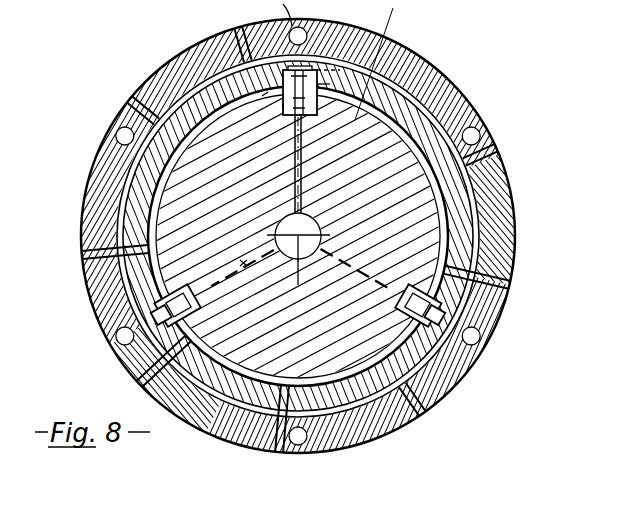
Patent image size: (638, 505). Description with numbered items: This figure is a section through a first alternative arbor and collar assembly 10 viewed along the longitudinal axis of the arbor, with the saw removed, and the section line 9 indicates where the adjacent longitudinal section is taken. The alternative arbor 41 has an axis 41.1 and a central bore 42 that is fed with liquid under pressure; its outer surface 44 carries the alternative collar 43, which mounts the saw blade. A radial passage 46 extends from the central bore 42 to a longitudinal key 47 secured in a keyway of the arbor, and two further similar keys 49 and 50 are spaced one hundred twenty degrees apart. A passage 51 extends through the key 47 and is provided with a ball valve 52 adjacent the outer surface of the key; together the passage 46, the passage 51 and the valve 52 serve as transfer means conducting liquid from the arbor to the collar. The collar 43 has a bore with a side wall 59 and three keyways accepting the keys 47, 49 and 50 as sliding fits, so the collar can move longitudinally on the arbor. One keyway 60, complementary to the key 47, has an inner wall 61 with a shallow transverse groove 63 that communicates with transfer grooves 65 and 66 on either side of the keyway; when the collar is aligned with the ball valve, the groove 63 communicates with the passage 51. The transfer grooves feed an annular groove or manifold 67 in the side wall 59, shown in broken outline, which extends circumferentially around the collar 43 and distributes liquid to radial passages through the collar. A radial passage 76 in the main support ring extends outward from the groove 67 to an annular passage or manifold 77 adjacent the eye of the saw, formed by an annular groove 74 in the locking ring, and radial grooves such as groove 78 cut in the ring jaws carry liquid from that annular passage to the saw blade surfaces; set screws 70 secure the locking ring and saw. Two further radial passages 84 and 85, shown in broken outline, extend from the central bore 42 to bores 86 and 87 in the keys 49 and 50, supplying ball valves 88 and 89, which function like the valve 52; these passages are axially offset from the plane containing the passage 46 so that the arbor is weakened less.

The section line 9- 9 is at (427, 23).
The rotary device 10 is at (275, 13).
The alternative arbor 41 is at (404, 187).
The axis 41.1 is at (312, 226).
The central bore 42 is at (283, 219).
The alternative collar 43 is at (453, 71).
The outer surface 44 is at (303, 388).
The radial passage 46 is at (304, 167).
The longitudinal key 47 is at (308, 108).
The key 49 is at (170, 290).
The key 50 is at (393, 317).
The passage 51 is at (296, 100).
The ball valve 52 is at (315, 66).
The side wall 59 is at (166, 168).
The keyway 60 is at (263, 98).
The inner wall 61 is at (332, 58).
The shallow transverse groove 63 is at (283, 53).
The transfer groove 65 is at (327, 84).
The transfer groove 66 is at (280, 100).
The annular groove or manifold 67 is at (420, 141).
The set screws 70 is at (300, 437).
The annular groove 74 is at (187, 93).
The radial passage 76 is at (387, 85).
The annular passage or manifold 77 is at (500, 157).
The radial groove 78 is at (410, 52).
The radial passage 84 is at (247, 258).
The radial passage 85 is at (361, 258).
The bore 86 is at (204, 318).
The bore 87 is at (398, 333).
The ball valve 88 is at (188, 332).
The ball valve 89 is at (435, 293).